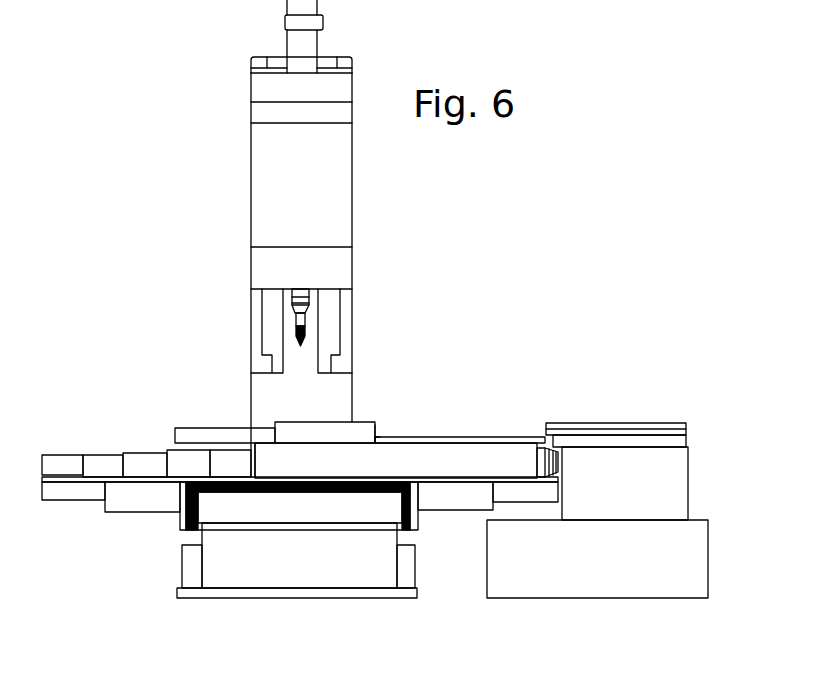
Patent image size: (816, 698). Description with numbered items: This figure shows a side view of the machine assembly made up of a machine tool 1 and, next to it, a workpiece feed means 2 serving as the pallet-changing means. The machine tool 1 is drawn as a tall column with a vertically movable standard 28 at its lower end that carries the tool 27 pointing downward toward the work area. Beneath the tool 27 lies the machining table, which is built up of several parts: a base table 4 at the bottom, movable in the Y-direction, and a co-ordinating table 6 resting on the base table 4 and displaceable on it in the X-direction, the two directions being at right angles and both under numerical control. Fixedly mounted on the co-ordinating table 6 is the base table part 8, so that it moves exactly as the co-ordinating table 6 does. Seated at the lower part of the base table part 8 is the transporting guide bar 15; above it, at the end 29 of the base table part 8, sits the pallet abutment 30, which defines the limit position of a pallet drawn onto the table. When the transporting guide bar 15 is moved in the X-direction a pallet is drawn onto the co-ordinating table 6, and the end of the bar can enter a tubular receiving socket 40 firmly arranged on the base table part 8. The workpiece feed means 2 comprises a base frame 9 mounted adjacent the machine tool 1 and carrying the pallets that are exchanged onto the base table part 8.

The machine tool 1 is at (329, 170).
The vertically movable standard 28 is at (330, 313).
The tool 27 is at (303, 335).
The base table part 8 is at (357, 427).
The end of the base table part 29 is at (376, 433).
The pallet abutment 30 is at (377, 432).
The tubular receiving socket 40 is at (194, 435).
The transporting guide bar 15 is at (480, 440).
The co-ordinating table 6 is at (507, 462).
The workpiece feed means 2 is at (695, 438).
The base frame 9 is at (670, 483).
The base table 4 is at (145, 498).